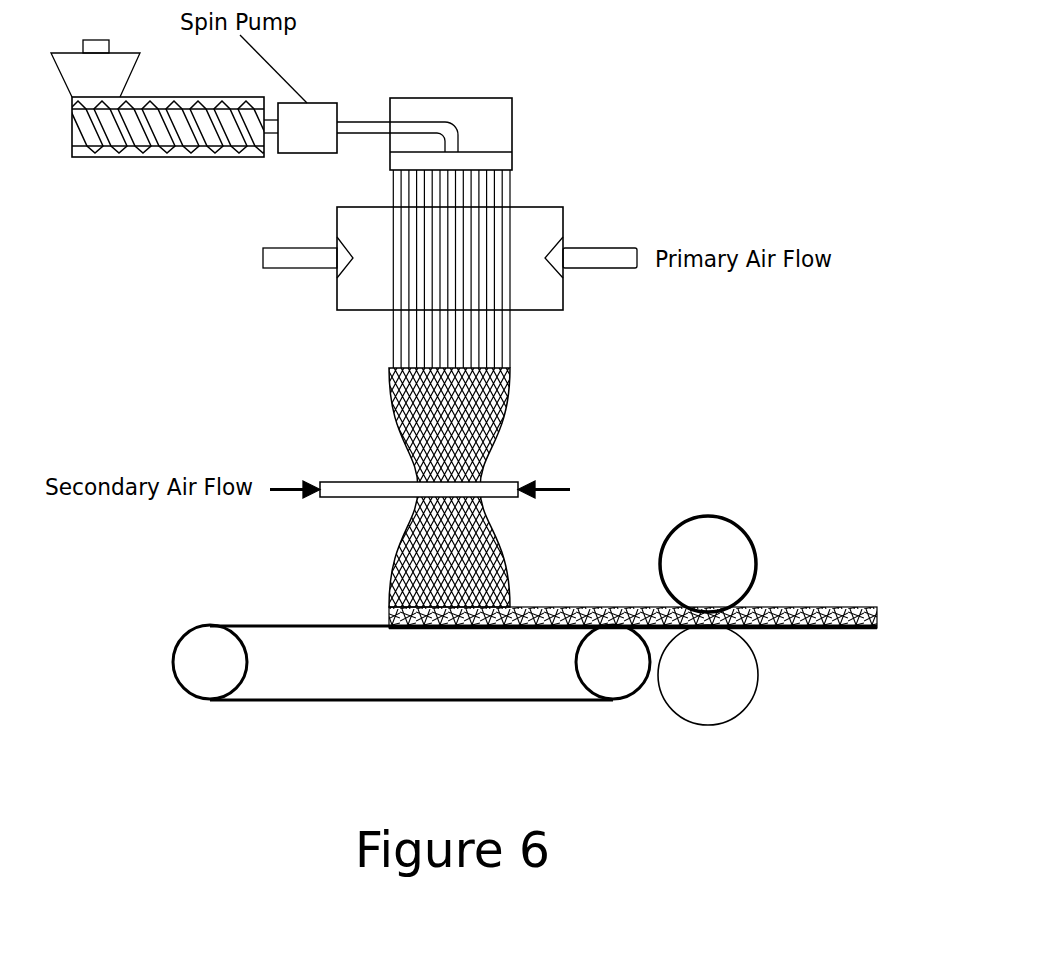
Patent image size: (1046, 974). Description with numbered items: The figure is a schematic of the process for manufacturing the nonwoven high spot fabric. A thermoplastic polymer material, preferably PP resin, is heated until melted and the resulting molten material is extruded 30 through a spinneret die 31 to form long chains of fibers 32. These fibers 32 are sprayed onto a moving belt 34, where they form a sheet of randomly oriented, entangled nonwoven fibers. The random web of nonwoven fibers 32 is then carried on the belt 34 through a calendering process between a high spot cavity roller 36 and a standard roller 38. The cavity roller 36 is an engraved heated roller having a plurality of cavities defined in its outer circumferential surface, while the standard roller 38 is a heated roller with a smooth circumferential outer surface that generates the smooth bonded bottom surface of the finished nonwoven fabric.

The extruder 30 is at (167, 157).
The spinneret die 31 is at (512, 158).
The fibers 32 is at (402, 552).
The moving belt 34 is at (258, 702).
The cavity roller 36 is at (732, 523).
The standard roller 38 is at (707, 725).